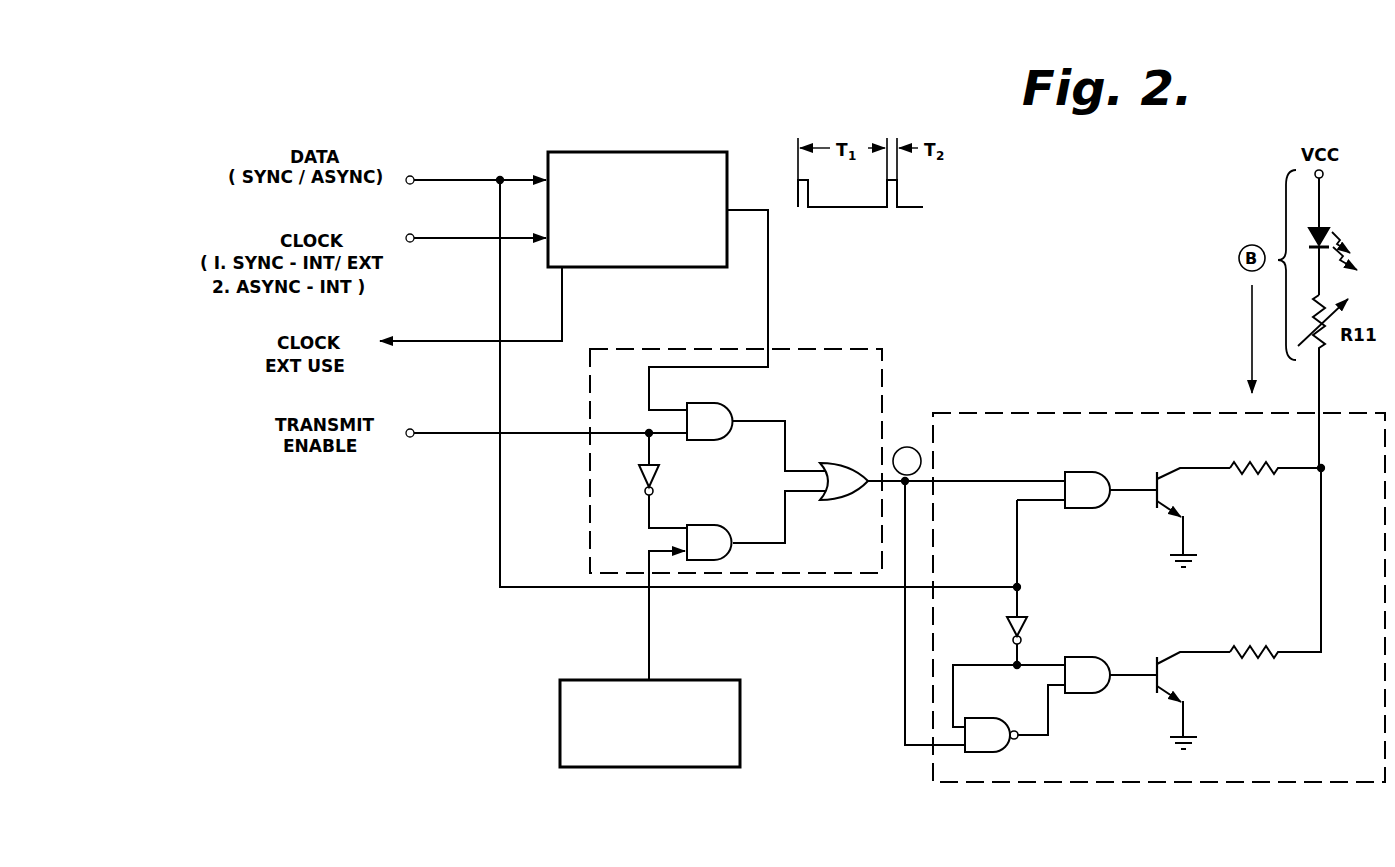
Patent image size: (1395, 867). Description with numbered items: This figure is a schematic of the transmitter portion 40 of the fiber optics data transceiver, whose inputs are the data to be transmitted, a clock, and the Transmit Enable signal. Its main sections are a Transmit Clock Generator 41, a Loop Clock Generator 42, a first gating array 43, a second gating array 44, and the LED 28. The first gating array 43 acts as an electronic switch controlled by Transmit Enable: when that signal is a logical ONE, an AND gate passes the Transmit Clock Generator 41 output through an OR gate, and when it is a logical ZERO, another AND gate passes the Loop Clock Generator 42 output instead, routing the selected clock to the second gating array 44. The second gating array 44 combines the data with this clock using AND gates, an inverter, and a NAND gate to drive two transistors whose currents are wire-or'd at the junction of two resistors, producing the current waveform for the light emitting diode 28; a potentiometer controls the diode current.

The transmitter portion 40 is at (466, 574).
The Transmit Clock Generator 41 is at (616, 146).
The Loop Clock Generator 42 is at (557, 752).
The first gating array 43 is at (862, 344).
The second gating array 44 is at (1146, 410).
The light emitting diode 28 is at (1327, 217).